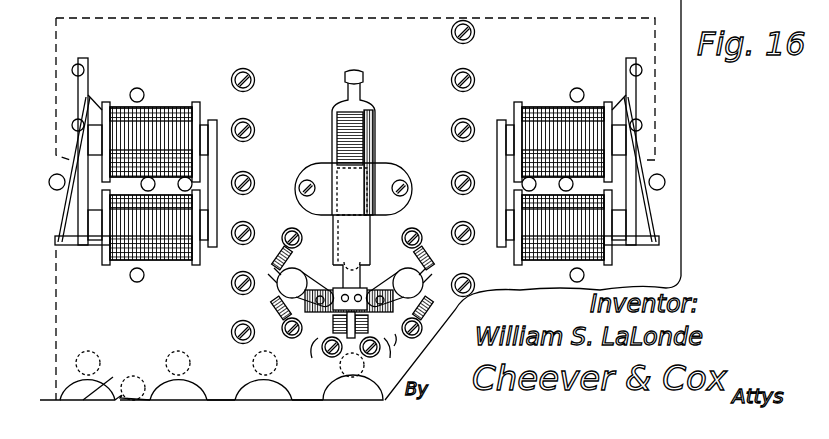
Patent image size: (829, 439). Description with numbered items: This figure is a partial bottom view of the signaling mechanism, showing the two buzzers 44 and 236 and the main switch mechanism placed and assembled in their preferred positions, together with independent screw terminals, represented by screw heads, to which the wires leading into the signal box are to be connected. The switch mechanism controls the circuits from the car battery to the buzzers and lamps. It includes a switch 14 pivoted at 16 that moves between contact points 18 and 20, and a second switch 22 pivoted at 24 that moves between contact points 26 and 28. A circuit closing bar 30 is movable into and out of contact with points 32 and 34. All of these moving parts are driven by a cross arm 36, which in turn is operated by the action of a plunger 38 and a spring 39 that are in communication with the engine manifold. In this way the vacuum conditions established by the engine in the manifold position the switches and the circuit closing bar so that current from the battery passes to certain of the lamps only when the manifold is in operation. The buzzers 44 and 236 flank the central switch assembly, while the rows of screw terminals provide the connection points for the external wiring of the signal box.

The switch 14 is at (272, 270).
The pivot 16 is at (300, 278).
The contact point 18 is at (274, 237).
The contact point 20 is at (275, 308).
The switch 22 is at (433, 273).
The pivot 24 is at (402, 256).
The contact point 26 is at (426, 240).
The contact point 28 is at (425, 315).
The circuit closing bar 30 is at (395, 340).
The contact point 32 is at (378, 356).
The contact point 34 is at (326, 355).
The cross arm 36 is at (372, 290).
The plunger 38 is at (353, 187).
The spring 39 is at (358, 115).
The buzzer 44 is at (155, 118).
The buzzer 236 is at (535, 115).